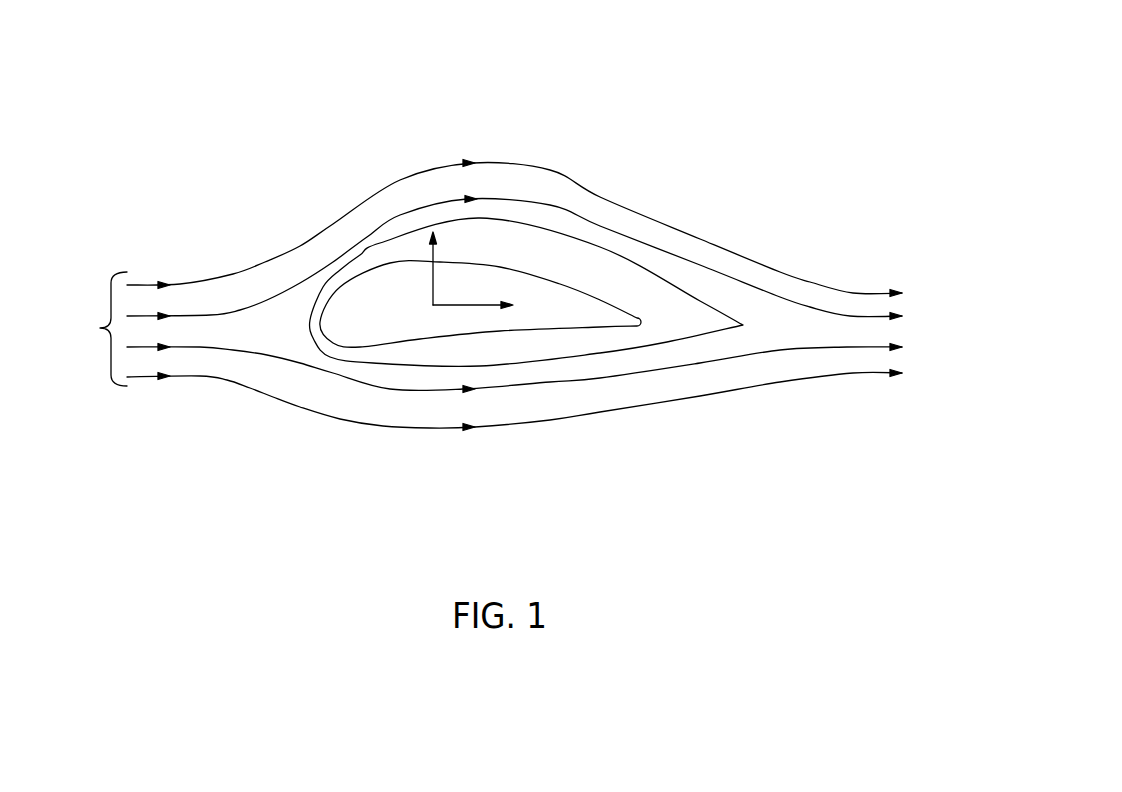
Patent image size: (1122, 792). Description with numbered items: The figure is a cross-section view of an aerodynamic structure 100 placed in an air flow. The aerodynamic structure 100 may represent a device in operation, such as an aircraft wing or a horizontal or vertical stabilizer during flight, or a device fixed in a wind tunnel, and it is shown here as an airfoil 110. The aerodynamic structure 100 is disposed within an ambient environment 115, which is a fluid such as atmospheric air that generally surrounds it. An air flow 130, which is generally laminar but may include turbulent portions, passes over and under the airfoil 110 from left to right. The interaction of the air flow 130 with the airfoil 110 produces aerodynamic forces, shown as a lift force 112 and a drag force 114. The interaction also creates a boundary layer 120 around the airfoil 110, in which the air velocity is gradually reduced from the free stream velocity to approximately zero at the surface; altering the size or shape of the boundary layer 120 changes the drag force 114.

The aerodynamic structure 100 is at (690, 67).
The airfoil 110 is at (365, 317).
The lift force 112 is at (435, 287).
The drag force 114 is at (455, 305).
The ambient environment 115 is at (308, 206).
The boundary layer 120 is at (672, 307).
The air flow 130 is at (111, 329).